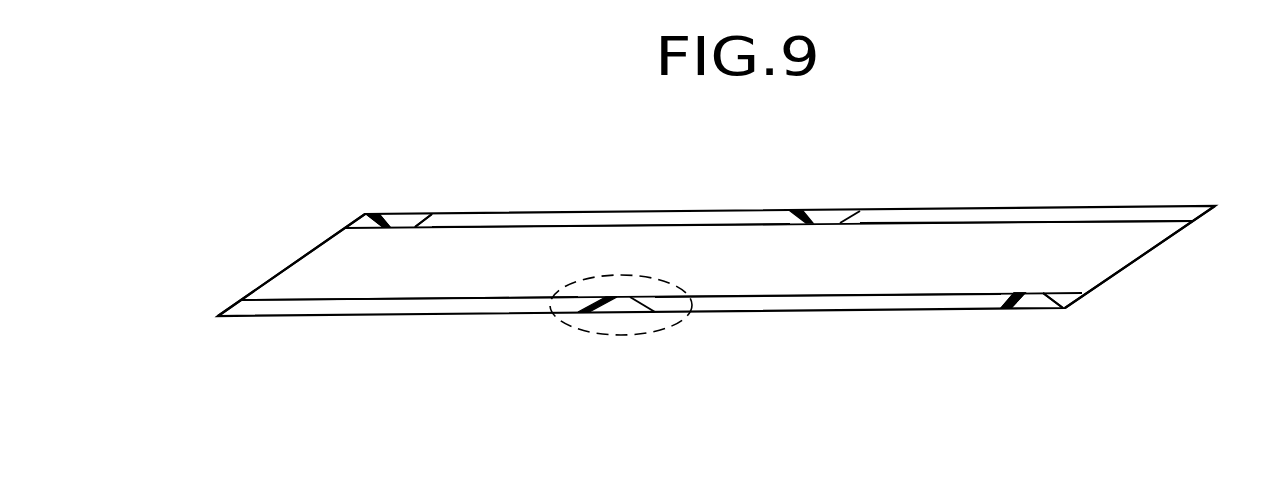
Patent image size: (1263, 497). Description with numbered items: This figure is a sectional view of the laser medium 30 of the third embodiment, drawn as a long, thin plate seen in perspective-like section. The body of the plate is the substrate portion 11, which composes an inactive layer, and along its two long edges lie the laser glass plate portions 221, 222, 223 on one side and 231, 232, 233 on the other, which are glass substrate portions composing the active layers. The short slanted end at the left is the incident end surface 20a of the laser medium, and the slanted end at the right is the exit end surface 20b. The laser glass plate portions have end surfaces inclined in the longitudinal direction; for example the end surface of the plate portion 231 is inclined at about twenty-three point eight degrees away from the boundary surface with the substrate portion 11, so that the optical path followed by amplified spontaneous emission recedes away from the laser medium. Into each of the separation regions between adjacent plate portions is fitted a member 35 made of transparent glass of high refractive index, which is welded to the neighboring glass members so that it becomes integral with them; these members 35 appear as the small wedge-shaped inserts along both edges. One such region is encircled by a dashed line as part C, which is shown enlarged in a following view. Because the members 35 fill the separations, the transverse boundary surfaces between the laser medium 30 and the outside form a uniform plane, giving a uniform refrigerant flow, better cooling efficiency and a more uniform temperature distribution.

The laser medium 30 is at (1226, 106).
The substrate portion 11 is at (1073, 230).
The incident end surface 20a is at (292, 263).
The exit end surface 20b is at (1139, 260).
The laser glass plate portion 221 is at (676, 212).
The laser glass plate portion 222 is at (980, 208).
The laser glass plate portion 223 is at (378, 214).
The laser glass plate portion 231 is at (865, 305).
The laser glass plate portion 232 is at (458, 307).
The laser glass plate portion 233 is at (1075, 310).
The member having a high refractive index 35 is at (421, 223).
The part C is at (680, 322).